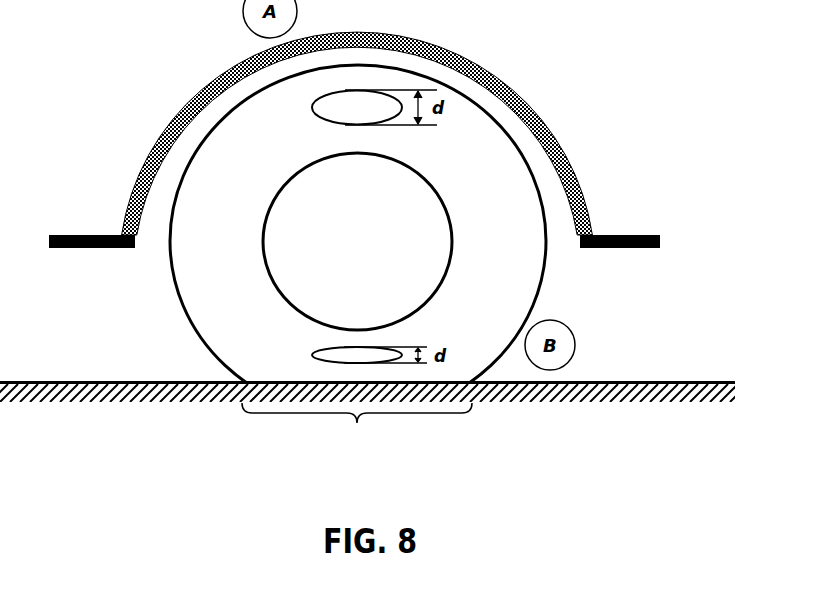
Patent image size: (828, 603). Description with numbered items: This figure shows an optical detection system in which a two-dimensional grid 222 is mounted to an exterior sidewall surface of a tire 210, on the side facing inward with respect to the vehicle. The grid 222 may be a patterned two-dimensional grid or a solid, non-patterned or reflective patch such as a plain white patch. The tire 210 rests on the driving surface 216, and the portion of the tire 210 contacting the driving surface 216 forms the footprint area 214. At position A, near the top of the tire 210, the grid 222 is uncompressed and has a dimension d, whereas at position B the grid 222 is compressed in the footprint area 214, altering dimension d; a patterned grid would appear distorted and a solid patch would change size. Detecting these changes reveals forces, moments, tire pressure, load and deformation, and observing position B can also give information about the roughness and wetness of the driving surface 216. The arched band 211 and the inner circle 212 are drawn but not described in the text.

The tire 210 is at (543, 250).
The wheel housing 211 is at (495, 72).
The wheel hub 212 is at (295, 177).
The footprint area 214 is at (357, 428).
The driving surface 216 is at (633, 380).
The two-dimensional grid 222 is at (348, 108).